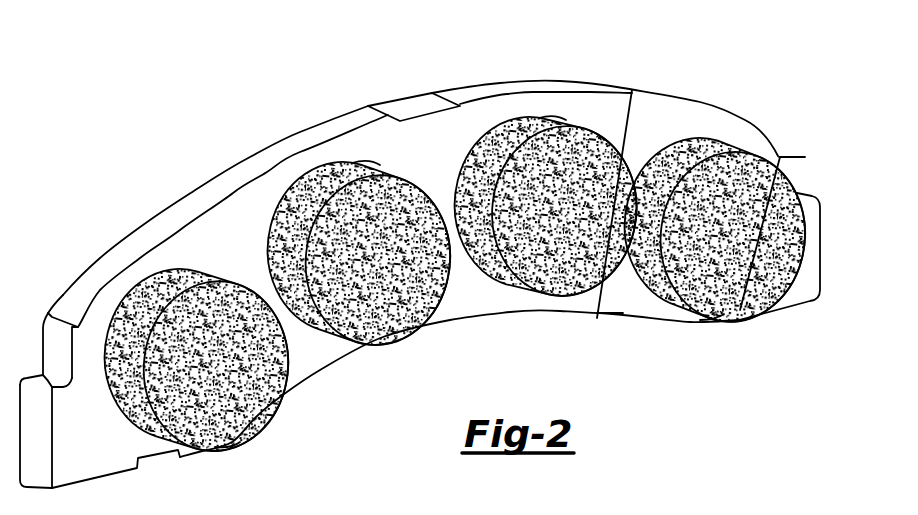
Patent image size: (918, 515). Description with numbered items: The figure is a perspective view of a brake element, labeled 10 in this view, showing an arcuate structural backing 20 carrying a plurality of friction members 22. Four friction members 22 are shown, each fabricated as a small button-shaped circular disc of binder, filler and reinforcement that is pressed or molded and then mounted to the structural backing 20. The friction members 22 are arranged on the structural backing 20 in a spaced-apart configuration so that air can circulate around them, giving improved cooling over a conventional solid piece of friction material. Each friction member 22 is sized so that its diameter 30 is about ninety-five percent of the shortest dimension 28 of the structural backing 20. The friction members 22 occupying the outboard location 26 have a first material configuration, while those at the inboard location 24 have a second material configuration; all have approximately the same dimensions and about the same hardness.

The assembly 10 is at (379, 244).
The structural backing 20 is at (582, 101).
The friction members 22 is at (375, 332).
The inboard location 24 is at (503, 127).
The outboard location 26 is at (230, 443).
The shortest dimension 28 is at (639, 113).
The diameter 30 is at (779, 188).